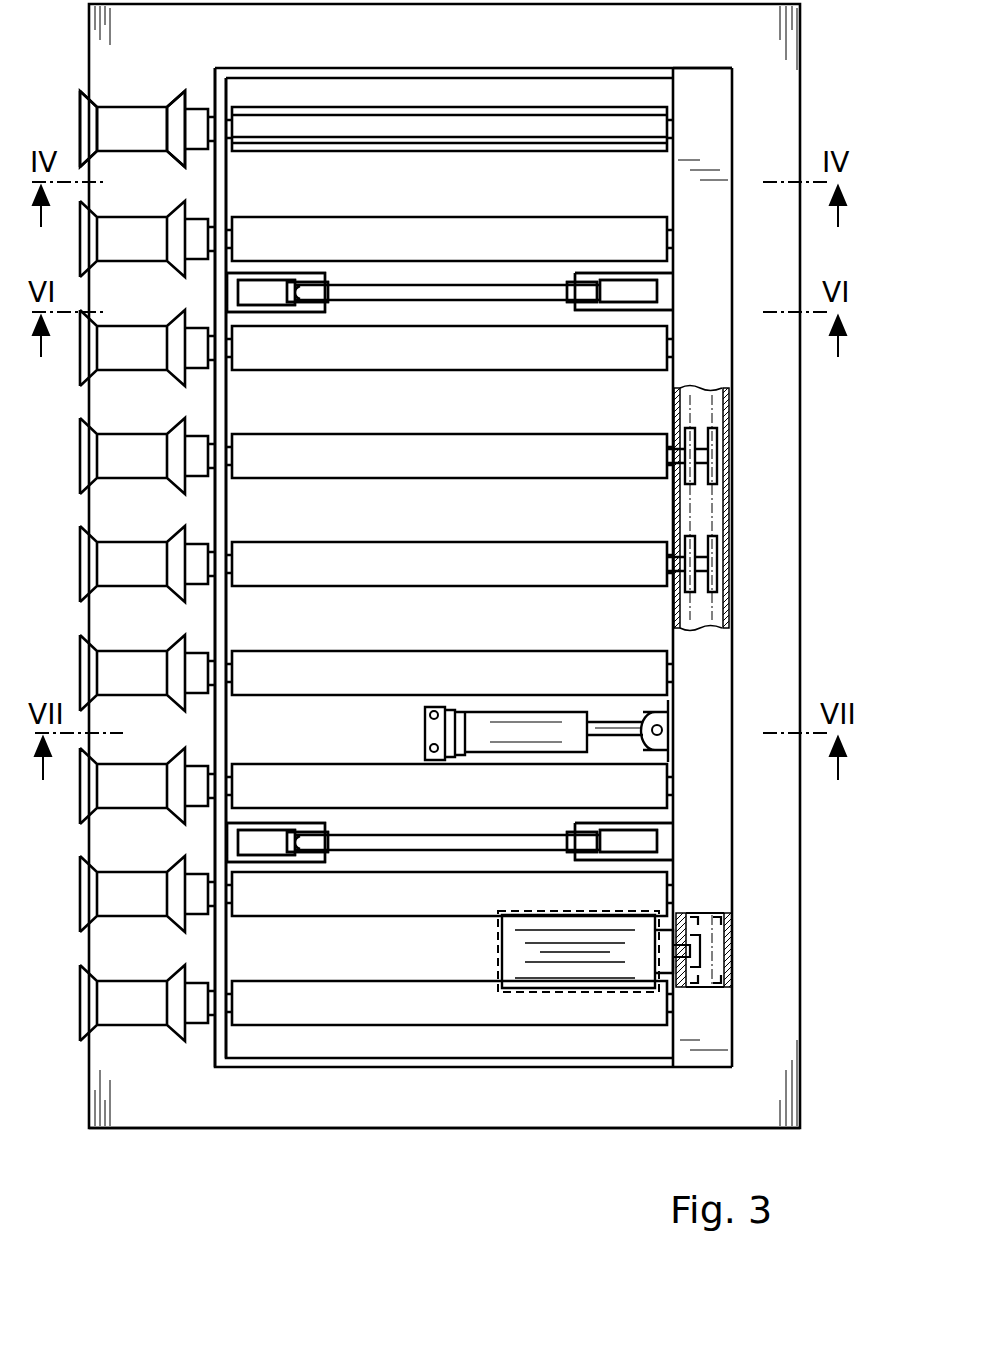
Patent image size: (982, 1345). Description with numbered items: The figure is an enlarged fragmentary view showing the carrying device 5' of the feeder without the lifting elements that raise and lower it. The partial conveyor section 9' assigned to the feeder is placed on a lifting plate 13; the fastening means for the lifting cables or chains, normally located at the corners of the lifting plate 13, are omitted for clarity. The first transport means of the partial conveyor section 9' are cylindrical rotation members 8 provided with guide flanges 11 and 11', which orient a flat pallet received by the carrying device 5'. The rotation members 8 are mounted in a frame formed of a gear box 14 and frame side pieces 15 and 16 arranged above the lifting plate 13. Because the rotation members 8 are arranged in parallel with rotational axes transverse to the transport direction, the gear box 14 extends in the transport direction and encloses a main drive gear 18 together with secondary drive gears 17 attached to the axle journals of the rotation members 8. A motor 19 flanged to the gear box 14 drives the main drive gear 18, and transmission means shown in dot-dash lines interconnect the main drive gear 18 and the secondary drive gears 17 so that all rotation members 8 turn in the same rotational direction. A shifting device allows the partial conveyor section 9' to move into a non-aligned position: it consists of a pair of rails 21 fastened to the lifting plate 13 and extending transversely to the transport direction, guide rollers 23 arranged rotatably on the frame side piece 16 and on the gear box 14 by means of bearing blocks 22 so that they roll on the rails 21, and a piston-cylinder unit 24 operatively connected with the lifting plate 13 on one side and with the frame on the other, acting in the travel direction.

The carrying device 5' is at (444, 1158).
The rotation members 8 is at (340, 120).
The partial conveyor section 9' is at (360, 1134).
The guide flange 11 is at (104, 116).
The guide flange 11' is at (178, 98).
The lifting plate 13 is at (515, 1103).
The gear box 14 is at (690, 85).
The frame side piece 15 is at (500, 68).
The frame side piece 16 is at (226, 178).
The secondary drive gears 17 is at (690, 432).
The main drive gear 18 is at (720, 945).
The motor 19 is at (578, 968).
The rails 21 is at (500, 290).
The bearing blocks 22 is at (265, 312).
The guide rollers 23 is at (340, 302).
The piston-cylinder unit 24 is at (510, 712).